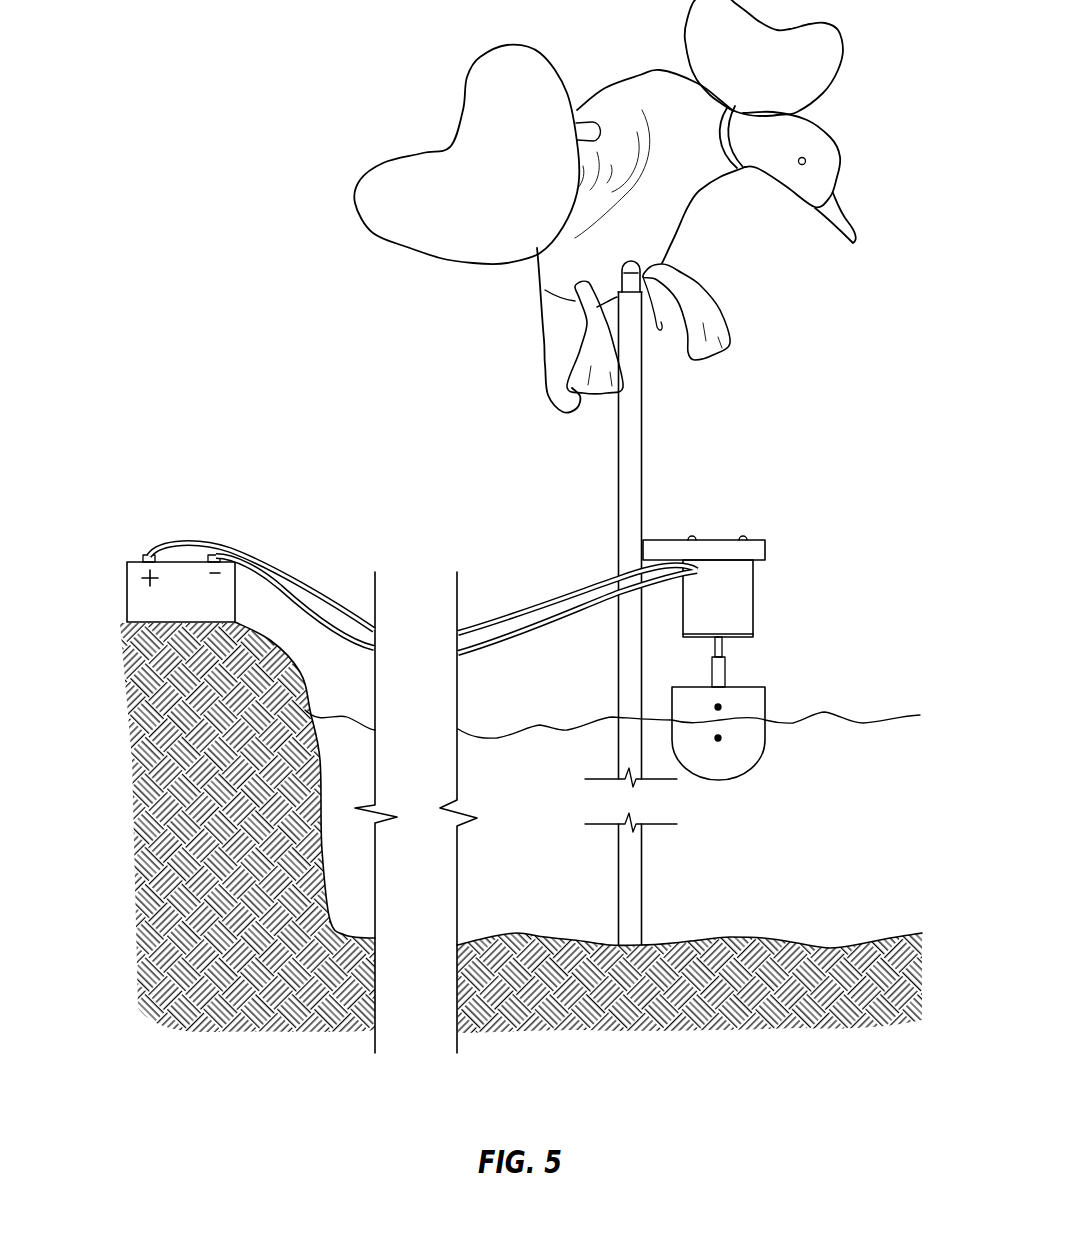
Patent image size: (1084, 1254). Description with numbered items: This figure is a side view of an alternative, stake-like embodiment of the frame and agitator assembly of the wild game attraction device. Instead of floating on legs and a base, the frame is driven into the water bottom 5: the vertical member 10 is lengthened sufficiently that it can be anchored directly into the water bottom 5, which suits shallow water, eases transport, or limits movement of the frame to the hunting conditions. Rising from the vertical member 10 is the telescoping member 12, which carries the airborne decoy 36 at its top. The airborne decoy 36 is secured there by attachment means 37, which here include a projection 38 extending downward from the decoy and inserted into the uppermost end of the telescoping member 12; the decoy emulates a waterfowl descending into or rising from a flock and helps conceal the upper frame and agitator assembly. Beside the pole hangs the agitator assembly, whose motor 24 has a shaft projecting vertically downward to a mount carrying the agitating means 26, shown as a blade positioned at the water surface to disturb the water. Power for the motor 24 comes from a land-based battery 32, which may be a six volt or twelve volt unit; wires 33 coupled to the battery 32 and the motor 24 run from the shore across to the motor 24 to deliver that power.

The water bottom 5 is at (762, 938).
The vertical member 10 is at (643, 875).
The telescoping member 12 is at (645, 438).
The motor 24 is at (755, 598).
The agitating means 26 is at (767, 700).
The battery 32 is at (127, 591).
The wires 33 is at (530, 605).
The airborne decoy 36 is at (643, 74).
The attachment means 37 is at (682, 260).
The projection 38 is at (627, 337).